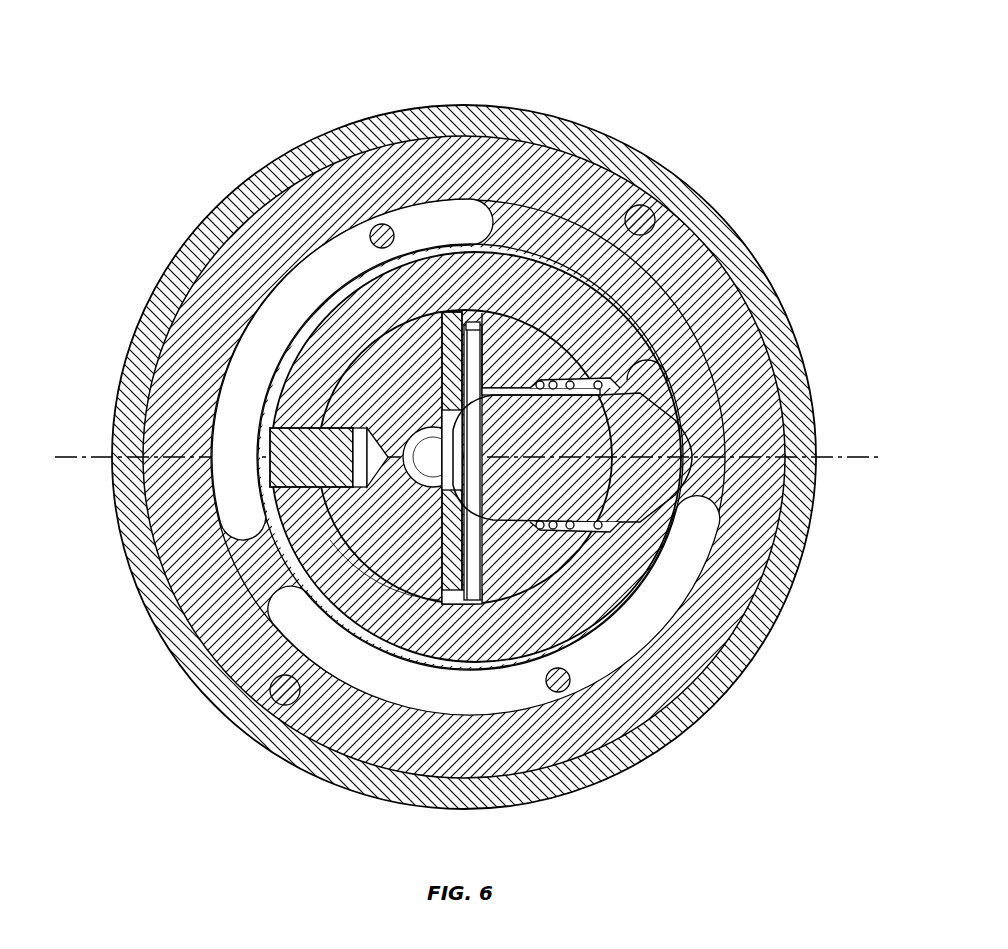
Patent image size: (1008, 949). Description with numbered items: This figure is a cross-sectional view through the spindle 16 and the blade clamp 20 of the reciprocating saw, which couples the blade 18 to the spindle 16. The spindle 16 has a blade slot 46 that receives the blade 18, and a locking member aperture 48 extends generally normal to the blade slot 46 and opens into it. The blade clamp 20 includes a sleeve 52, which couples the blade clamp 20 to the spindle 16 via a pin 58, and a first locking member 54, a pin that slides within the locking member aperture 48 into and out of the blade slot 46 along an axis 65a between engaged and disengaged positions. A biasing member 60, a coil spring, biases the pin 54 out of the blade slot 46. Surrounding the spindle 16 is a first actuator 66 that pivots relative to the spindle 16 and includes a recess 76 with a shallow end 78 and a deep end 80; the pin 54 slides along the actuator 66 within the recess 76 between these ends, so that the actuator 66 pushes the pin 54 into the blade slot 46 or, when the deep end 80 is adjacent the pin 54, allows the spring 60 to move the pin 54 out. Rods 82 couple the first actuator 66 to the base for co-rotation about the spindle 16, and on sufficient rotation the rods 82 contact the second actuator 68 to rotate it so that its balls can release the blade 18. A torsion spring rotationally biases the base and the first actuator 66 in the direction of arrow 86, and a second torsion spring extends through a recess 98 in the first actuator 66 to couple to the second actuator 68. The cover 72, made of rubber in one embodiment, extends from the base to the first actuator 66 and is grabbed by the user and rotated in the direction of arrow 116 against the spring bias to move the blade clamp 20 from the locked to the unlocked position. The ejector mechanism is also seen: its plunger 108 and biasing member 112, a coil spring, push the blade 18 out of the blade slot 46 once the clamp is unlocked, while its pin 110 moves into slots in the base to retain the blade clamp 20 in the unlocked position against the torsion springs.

The blade clamp 20 is at (314, 78).
The spindle 16 is at (397, 357).
The blade 18 is at (443, 312).
The plunger 108 is at (476, 355).
The sleeve 52 is at (548, 358).
The rods 82 is at (648, 212).
The biasing member 60 is at (575, 350).
The shallow end 78 is at (600, 383).
The first locking member 54 is at (690, 430).
The axis 65a is at (843, 456).
The locking member aperture 48 is at (600, 522).
The arrow 86 is at (776, 690).
The arrow 116 is at (757, 722).
The recess 76 is at (565, 640).
The blade slot 46 is at (465, 600).
The deep end 80 is at (405, 690).
The pin 110 is at (330, 600).
The pin 58 is at (280, 462).
The second actuator 68 is at (235, 440).
The biasing member 112 is at (425, 425).
The first actuator 66 is at (200, 300).
The cover 72 is at (197, 228).
The recess 98 is at (298, 280).